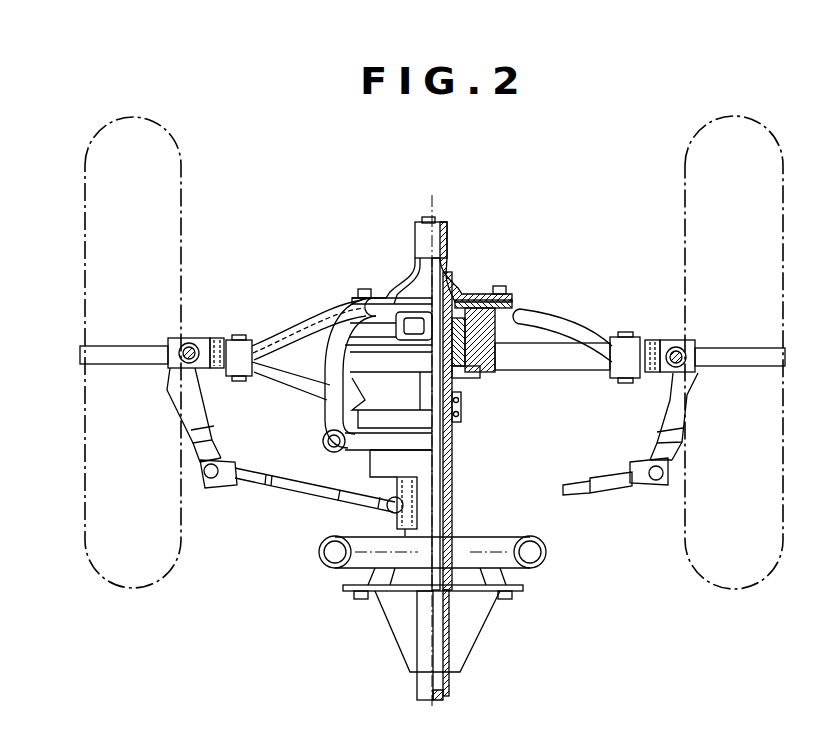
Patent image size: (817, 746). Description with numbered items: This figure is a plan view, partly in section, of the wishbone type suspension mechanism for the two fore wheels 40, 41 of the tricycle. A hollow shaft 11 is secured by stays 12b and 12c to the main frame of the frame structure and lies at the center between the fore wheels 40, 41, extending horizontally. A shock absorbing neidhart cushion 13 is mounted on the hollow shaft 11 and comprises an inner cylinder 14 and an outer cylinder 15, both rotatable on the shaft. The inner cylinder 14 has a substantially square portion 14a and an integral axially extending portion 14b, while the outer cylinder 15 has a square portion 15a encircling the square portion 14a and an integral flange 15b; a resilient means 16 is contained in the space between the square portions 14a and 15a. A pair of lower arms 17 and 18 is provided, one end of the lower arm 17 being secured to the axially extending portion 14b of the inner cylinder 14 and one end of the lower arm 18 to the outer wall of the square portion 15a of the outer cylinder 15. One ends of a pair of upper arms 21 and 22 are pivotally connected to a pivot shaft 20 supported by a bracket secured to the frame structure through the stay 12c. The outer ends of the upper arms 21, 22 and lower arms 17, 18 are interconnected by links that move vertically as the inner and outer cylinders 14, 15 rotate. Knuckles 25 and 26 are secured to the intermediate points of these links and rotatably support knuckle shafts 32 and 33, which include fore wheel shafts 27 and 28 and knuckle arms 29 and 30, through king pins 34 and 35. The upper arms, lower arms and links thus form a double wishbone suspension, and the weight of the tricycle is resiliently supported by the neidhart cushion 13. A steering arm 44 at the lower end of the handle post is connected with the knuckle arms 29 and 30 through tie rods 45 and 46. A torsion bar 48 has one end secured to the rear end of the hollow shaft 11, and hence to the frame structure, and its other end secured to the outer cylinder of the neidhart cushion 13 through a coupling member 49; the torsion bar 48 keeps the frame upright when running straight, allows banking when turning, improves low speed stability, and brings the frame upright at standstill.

The hollow shaft 11 is at (453, 508).
The stay 12b is at (324, 562).
The stay 12c is at (348, 448).
The neidhart cushion 13 is at (372, 336).
The inner cylinder 14 is at (452, 395).
The square portion 14a is at (470, 378).
The axially extending portion 14b is at (461, 420).
The outer cylinder 15 is at (374, 373).
The square portion 15a is at (480, 372).
The flange 15b is at (364, 288).
The resilient means 16 is at (497, 340).
The lower arm 17 is at (282, 386).
The lower arm 18 is at (570, 371).
The pivot shaft 20 is at (395, 300).
The upper arm 21 is at (300, 330).
The upper arm 22 is at (560, 320).
The knuckle 25 is at (233, 336).
The knuckle 26 is at (640, 340).
The fore wheel shaft 27 is at (120, 366).
The fore wheel shaft 28 is at (745, 368).
The knuckle arm 29 is at (165, 412).
The knuckle arm 30 is at (690, 408).
The knuckle shaft 32 is at (167, 345).
The knuckle shaft 33 is at (695, 350).
The king pin 34 is at (213, 336).
The king pin 35 is at (668, 342).
The fore wheel 40 is at (133, 590).
The fore wheel 41 is at (734, 590).
The steering arm 44 is at (397, 472).
The tie rod 45 is at (290, 498).
The tie rod 46 is at (580, 496).
The torsion bar 48 is at (440, 656).
The coupling member 49 is at (470, 275).